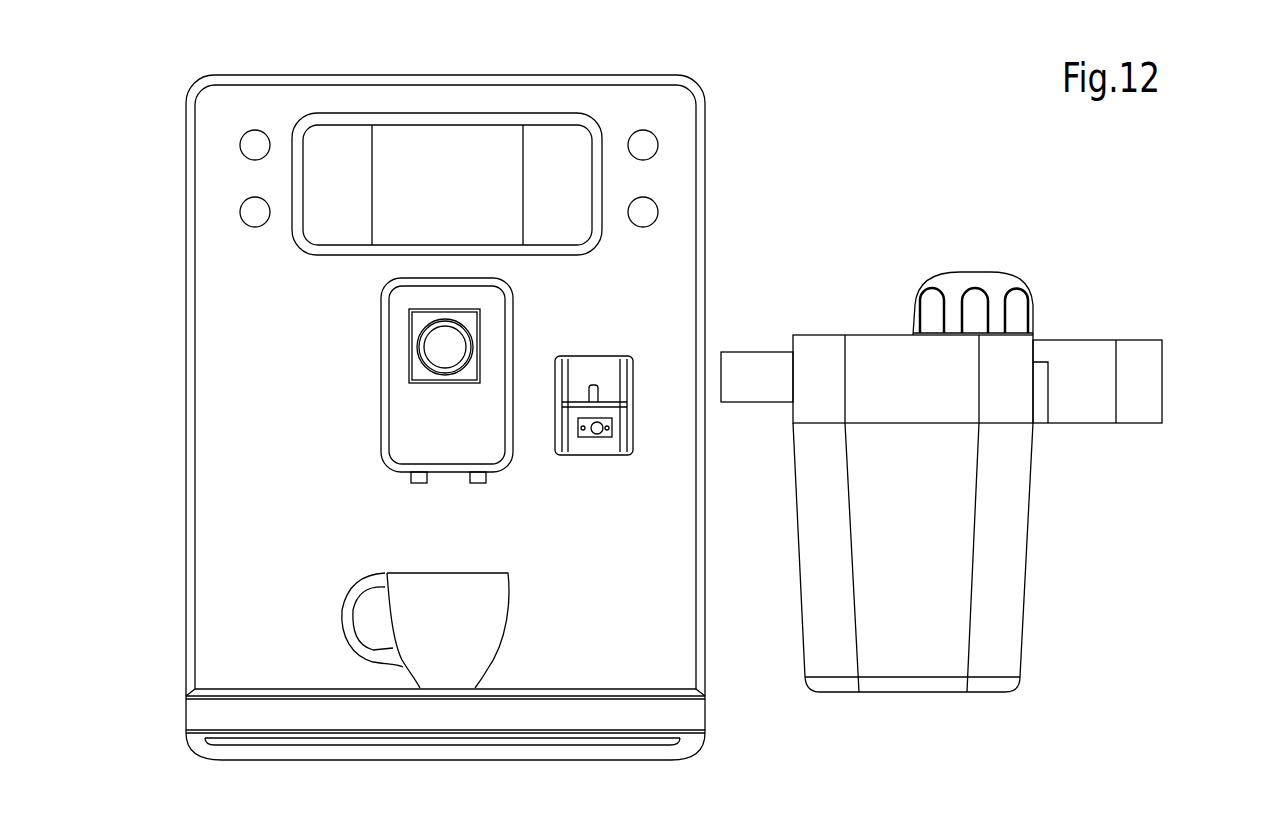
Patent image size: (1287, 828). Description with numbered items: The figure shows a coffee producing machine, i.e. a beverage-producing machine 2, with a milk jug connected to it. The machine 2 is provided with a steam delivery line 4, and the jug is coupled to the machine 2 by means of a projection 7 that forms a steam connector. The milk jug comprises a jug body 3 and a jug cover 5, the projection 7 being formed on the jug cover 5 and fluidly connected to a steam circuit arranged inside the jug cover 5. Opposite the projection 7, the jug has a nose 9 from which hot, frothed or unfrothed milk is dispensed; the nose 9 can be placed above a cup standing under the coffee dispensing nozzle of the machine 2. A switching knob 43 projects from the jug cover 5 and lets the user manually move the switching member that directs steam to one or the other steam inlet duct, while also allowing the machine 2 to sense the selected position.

The beverage-producing machine 2 is at (802, 109).
The jug body 3 is at (993, 582).
The steam delivery line 4 is at (593, 385).
The jug cover 5 is at (888, 370).
The projection 7 is at (743, 375).
The nose 9 is at (1103, 367).
The switching knob 43 is at (933, 308).